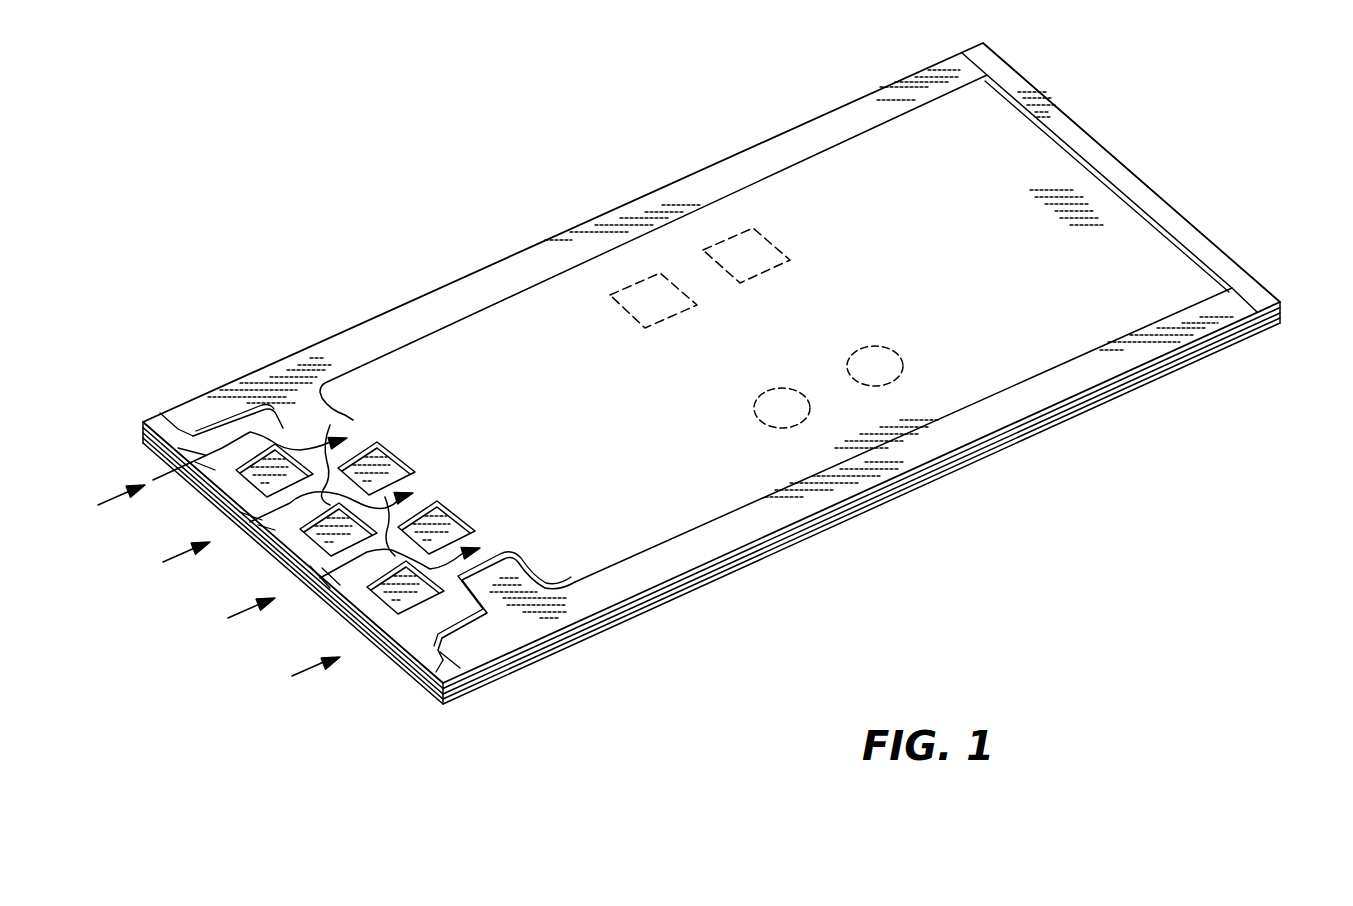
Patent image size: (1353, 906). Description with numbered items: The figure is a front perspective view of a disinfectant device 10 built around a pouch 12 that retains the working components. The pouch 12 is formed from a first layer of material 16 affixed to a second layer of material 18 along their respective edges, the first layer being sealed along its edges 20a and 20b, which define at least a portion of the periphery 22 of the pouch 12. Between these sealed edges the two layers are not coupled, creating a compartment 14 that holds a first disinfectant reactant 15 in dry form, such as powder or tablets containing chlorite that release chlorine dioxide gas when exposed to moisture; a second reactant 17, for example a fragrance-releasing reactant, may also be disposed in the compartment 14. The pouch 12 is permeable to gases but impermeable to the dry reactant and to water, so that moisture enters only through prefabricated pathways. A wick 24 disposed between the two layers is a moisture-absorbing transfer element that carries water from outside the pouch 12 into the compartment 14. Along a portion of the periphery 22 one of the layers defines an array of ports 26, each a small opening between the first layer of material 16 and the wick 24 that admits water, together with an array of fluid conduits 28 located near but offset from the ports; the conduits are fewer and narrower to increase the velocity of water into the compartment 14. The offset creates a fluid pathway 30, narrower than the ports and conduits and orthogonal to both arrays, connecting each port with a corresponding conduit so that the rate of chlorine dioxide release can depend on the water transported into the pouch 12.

The disinfectant device 10 is at (435, 236).
The pouch 12 is at (830, 105).
The compartment 14 is at (1003, 143).
The first disinfectant reactant 15 is at (742, 255).
The first layer of material 16 is at (1283, 303).
The second reactant 17 is at (883, 346).
The second layer of material 18 is at (1283, 319).
The edge 20a is at (990, 413).
The edge 20b is at (655, 207).
The periphery 22 is at (1098, 160).
The wick 24 is at (431, 697).
The array of ports 26 is at (188, 465).
The array of fluid conduits 28 is at (482, 546).
The fluid pathway 30 is at (282, 432).